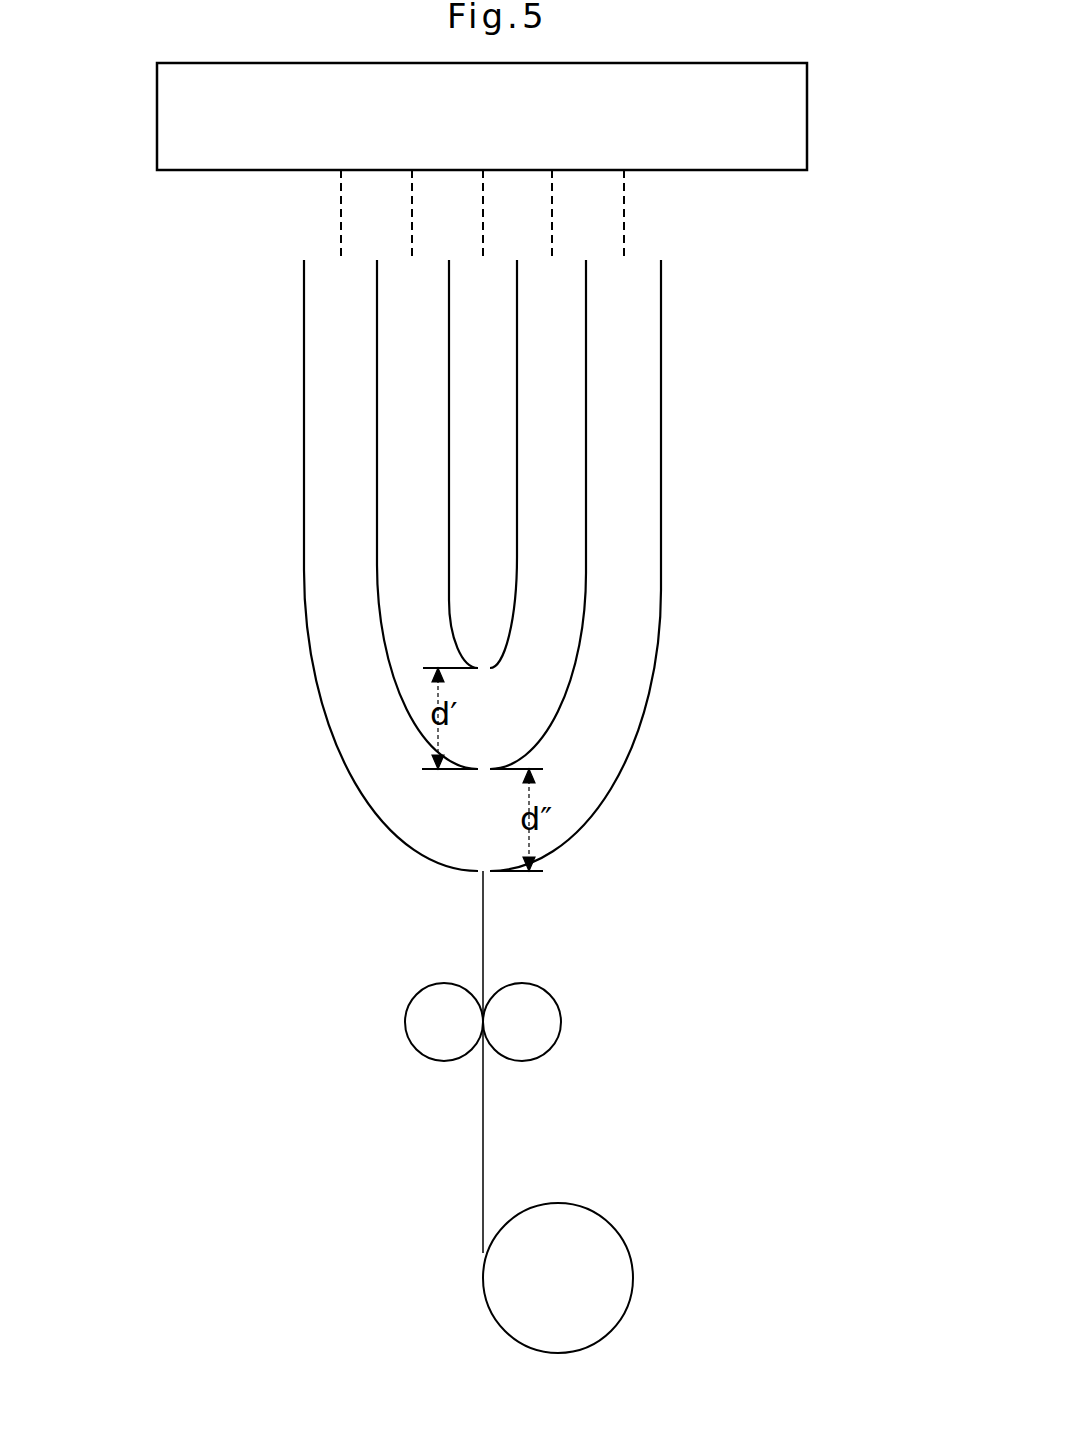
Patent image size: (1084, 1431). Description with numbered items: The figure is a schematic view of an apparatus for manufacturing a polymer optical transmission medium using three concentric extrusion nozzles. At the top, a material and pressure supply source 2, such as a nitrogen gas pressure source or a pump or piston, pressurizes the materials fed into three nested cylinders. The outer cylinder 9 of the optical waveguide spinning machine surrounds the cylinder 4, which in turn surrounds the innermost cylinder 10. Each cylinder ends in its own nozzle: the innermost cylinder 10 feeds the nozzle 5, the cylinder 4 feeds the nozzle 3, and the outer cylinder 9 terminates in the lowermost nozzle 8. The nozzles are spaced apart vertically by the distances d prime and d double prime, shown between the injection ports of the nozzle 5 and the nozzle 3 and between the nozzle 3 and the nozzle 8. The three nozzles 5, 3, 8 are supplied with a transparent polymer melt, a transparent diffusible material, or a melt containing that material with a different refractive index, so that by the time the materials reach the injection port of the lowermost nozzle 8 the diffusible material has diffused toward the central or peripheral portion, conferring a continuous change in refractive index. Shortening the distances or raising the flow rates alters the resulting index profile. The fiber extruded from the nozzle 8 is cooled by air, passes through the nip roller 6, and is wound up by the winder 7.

The material and pressure supply source 2 is at (312, 136).
The nozzle 3 is at (525, 759).
The cylinder 4 is at (586, 338).
The nozzle 5 is at (460, 660).
The nip roller 6 is at (527, 970).
The winder 7 is at (573, 1186).
The nozzle 8 is at (545, 862).
The cylinder 9 is at (661, 310).
The innermost cylinder 10 is at (517, 355).